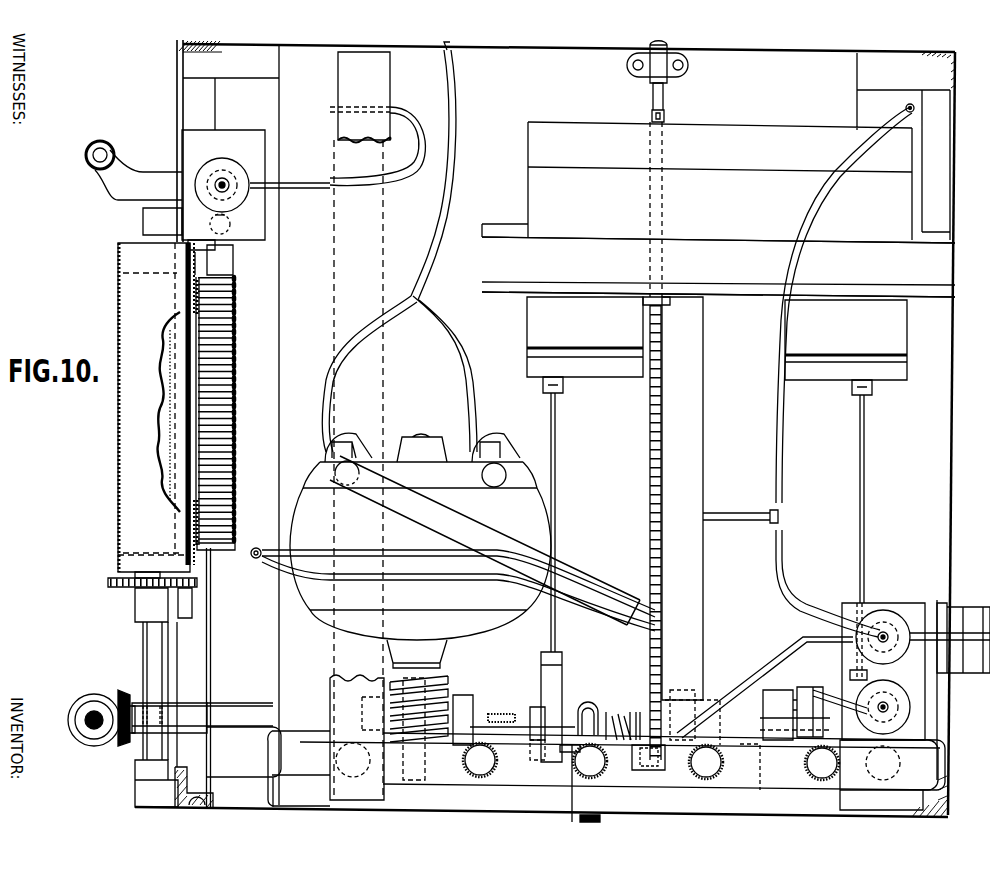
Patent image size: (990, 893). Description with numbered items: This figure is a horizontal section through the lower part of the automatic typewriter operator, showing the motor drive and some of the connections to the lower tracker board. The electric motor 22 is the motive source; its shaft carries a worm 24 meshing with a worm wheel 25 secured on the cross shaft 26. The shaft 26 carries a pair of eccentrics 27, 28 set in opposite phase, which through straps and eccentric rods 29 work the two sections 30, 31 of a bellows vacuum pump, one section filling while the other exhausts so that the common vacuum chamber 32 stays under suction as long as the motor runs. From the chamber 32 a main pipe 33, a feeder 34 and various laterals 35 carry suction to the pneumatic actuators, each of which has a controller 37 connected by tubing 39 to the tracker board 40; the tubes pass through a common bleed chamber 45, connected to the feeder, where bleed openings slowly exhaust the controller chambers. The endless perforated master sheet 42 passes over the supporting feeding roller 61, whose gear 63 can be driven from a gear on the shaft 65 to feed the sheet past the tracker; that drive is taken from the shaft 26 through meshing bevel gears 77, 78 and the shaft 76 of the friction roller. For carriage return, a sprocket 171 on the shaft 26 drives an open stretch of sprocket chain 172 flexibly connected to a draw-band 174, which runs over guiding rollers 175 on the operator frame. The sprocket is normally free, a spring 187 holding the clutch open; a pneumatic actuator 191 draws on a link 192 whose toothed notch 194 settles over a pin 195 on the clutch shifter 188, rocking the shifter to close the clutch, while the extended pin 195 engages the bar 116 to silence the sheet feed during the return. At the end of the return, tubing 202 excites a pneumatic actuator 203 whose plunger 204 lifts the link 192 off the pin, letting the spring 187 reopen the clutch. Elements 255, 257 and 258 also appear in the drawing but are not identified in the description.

The electric motor 22 is at (420, 550).
The worm 24 is at (446, 692).
The worm wheel 25 is at (414, 780).
The shaft 26 is at (255, 711).
The eccentric 27 is at (541, 670).
The eccentric 28 is at (850, 678).
The eccentric rods 29 is at (556, 490).
The bellows pump section 30 is at (585, 345).
The bellows pump section 31 is at (846, 347).
The vacuum chamber 32 is at (718, 267).
The main pipe 33 is at (703, 428).
The feeder 34 is at (650, 772).
The laterals 35 is at (812, 779).
The controller 37 is at (236, 214).
The tubing 39 is at (238, 300).
The tracker board 40 is at (172, 412).
The endless perforated sheet 42 is at (117, 470).
The bleed chamber 45 is at (364, 682).
The supporting feeding roller 61 is at (118, 558).
The gear 63 is at (110, 588).
The shaft 65 is at (145, 653).
The shaft 76 is at (95, 711).
The bevel gear 77 is at (74, 715).
The bevel gear 78 is at (118, 740).
The bar 116 is at (602, 822).
The sprocket 171 is at (700, 692).
The sprocket chain 172 is at (650, 445).
The draw-band 174 is at (686, 60).
The guiding rollers 175 is at (666, 95).
The spring 187 is at (614, 712).
The clutch shifter 188 is at (582, 708).
The pneumatic actuator 191 is at (763, 705).
The link 192 is at (745, 748).
The notch 194 is at (570, 752).
The pin 195 is at (582, 795).
The tubing 202 is at (905, 108).
The pneumatic actuator 203 is at (885, 612).
The plunger 204 is at (766, 655).
The tube 255 is at (422, 553).
The block 257 is at (530, 735).
The pin 258 is at (500, 714).